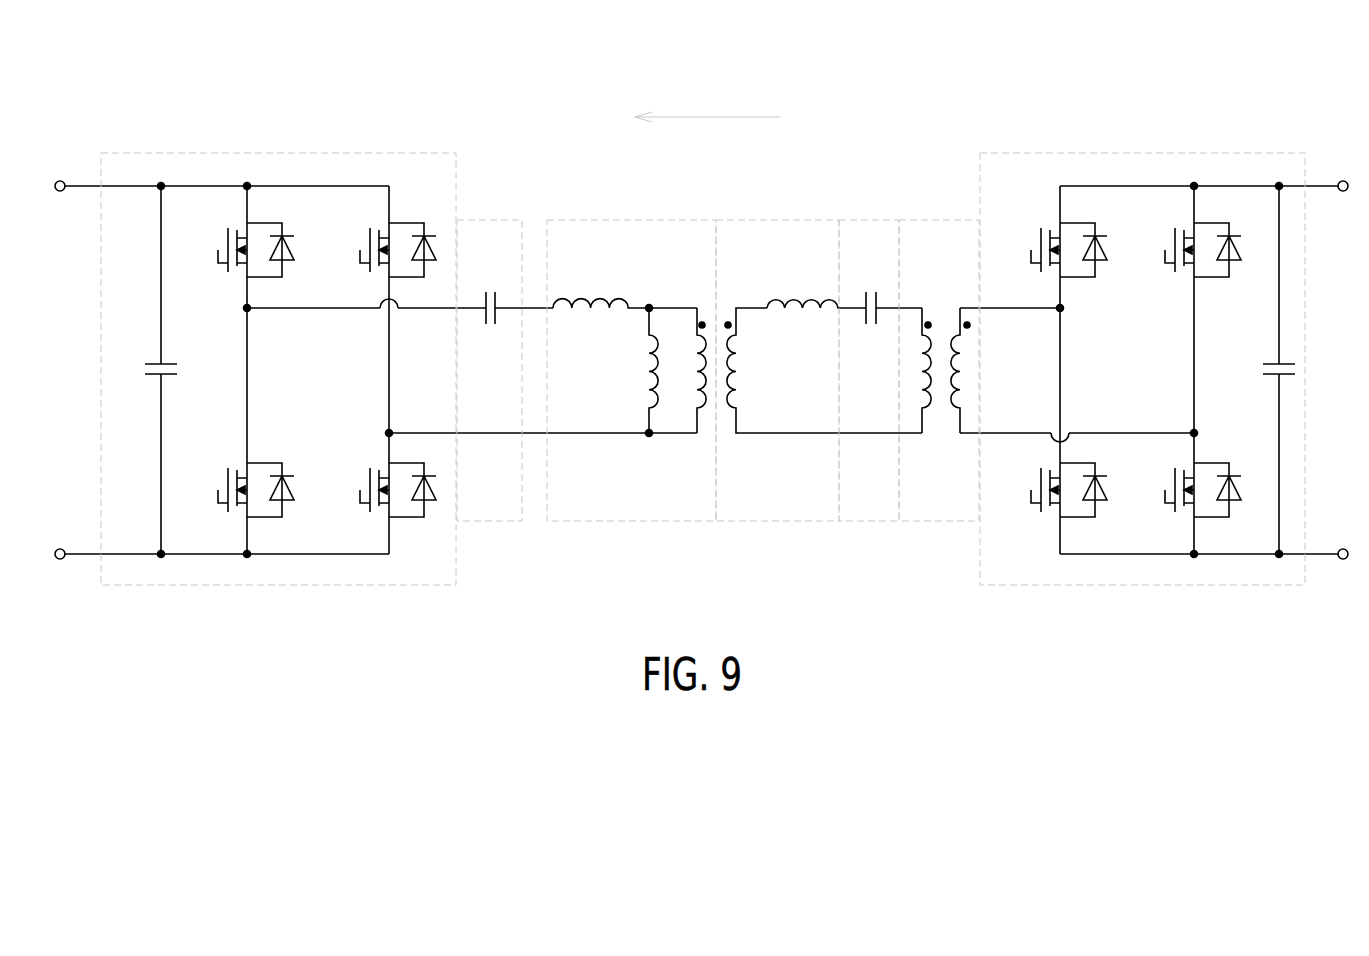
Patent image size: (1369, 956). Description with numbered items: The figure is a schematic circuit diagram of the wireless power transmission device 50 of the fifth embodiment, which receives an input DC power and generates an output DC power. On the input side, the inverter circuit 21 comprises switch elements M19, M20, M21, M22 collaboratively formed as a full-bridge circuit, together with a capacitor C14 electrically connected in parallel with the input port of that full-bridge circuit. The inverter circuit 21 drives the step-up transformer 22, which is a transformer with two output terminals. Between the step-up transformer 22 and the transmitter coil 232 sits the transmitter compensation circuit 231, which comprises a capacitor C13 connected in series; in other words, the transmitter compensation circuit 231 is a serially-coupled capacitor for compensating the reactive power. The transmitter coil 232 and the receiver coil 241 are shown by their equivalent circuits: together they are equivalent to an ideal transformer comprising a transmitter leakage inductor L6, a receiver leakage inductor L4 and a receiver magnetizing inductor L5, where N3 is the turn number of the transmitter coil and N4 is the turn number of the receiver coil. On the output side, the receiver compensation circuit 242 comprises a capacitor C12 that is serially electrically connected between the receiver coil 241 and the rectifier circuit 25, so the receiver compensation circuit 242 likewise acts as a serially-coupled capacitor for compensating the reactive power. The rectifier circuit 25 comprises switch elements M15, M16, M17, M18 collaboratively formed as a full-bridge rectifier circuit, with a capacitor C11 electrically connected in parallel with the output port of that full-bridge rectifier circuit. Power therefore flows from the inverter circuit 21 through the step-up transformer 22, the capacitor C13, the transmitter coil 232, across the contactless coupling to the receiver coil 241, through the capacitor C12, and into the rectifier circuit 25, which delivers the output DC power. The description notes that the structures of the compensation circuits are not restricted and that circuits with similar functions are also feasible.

The wireless power transmission device 50 is at (1300, 82).
The rectifier circuit 25 is at (278, 153).
The inverter circuit 21 is at (1163, 153).
The receiver compensation circuit 242 is at (492, 218).
The receiver coil 241 is at (630, 218).
The transmitter coil 232 is at (777, 219).
The transmitter compensation circuit 231 is at (868, 219).
The step-up transformer 22 is at (938, 219).
The capacitor C11 is at (142, 370).
The capacitor C12 is at (490, 290).
The capacitor C13 is at (886, 290).
The capacitor C14 is at (1263, 370).
The receiver leakage inductor L4 is at (625, 282).
The receiver magnetizing inductor L5 is at (639, 370).
The transmitter leakage inductor L6 is at (816, 282).
The turn number of the receiver coil N4 is at (685, 370).
The turn number of the transmitter coil N3 is at (823, 370).
The switch element M15 is at (231, 250).
The switch element M16 is at (373, 250).
The switch element M17 is at (231, 490).
The switch element M18 is at (373, 490).
The switch element M19 is at (1046, 250).
The switch element M20 is at (1178, 250).
The switch element M21 is at (1178, 490).
The switch element M22 is at (1046, 490).